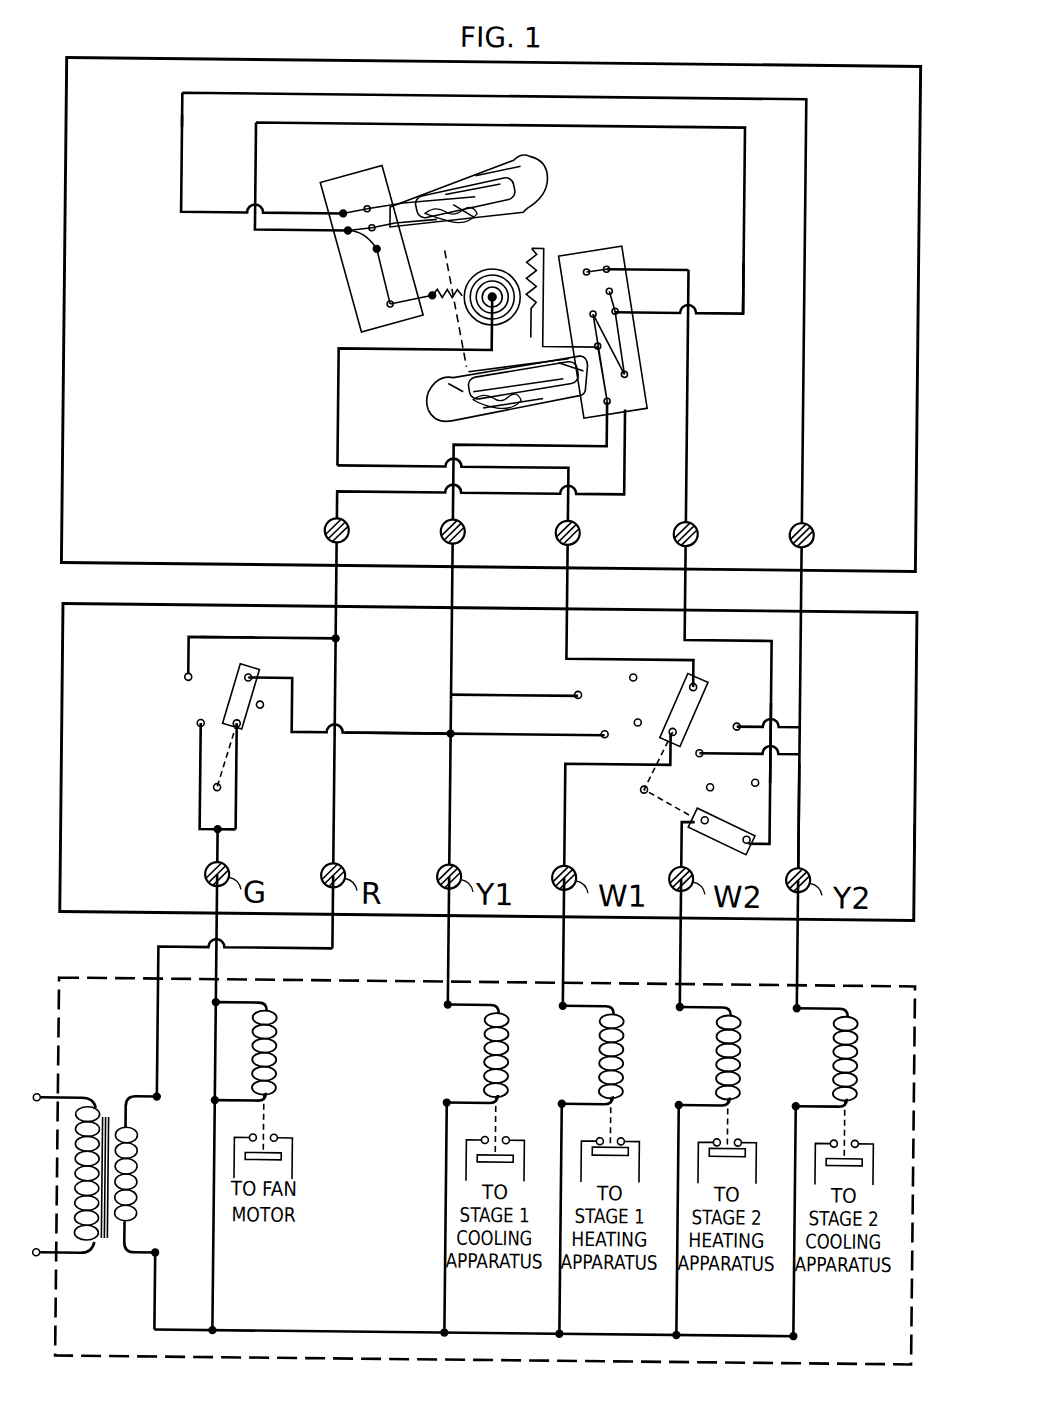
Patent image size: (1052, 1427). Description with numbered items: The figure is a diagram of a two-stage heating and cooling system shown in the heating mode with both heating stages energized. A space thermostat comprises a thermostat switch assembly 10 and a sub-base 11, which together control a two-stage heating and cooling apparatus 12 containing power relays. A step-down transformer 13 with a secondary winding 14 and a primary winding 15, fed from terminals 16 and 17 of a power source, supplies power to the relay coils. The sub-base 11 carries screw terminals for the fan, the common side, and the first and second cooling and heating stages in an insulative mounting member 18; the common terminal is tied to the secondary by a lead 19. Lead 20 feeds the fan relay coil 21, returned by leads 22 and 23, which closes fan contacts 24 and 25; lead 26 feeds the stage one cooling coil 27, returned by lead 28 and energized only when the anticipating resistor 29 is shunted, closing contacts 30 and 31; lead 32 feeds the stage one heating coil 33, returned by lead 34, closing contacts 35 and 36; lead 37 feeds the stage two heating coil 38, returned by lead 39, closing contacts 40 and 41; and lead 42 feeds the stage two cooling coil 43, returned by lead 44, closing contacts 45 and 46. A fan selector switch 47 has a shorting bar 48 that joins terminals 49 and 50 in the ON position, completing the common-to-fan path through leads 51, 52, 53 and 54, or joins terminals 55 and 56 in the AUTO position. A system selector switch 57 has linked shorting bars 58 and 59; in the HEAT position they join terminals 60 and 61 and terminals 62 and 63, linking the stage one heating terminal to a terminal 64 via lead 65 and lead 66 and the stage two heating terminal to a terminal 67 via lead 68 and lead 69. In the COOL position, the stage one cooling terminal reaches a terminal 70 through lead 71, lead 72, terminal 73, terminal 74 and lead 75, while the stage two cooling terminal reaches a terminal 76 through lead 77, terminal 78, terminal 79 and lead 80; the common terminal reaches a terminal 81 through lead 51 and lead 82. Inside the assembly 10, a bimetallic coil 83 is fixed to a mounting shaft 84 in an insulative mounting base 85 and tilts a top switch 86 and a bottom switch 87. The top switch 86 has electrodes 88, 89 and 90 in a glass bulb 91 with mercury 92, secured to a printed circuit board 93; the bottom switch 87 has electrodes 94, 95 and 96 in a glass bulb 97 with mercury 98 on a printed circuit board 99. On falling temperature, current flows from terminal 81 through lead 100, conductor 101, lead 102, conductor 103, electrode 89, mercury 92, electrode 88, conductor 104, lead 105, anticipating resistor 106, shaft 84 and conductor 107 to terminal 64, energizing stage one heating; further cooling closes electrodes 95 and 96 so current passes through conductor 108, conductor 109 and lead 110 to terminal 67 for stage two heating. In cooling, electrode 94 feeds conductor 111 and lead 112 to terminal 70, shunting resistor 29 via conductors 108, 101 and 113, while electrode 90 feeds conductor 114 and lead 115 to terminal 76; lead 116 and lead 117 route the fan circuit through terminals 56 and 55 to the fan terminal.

The thermostat switch assembly 10 is at (815, 58).
The sub-base 11 is at (842, 604).
The two-stage heating and cooling apparatus 12 is at (858, 978).
The voltage step-down transformer 13 is at (108, 1100).
The secondary winding 14 is at (136, 1178).
The primary winding 15 is at (82, 1170).
The terminal 16 is at (42, 1097).
The terminal 17 is at (42, 1262).
The insulative mounting member 18 is at (904, 833).
The lead 19 is at (336, 928).
The lead 20 is at (219, 928).
The operating coil 21 is at (280, 1015).
The lead 22 is at (219, 1283).
The lead 23 is at (162, 1275).
The relay contact 24 is at (256, 1133).
The relay contact 25 is at (279, 1133).
The lead 26 is at (451, 933).
The operating coil 27 is at (512, 1015).
The lead 28 is at (451, 1287).
The anticipating resistor 29 is at (530, 248).
The relay contact 30 is at (489, 1133).
The relay contact 31 is at (511, 1133).
The lead 32 is at (566, 933).
The operating coil 33 is at (627, 1015).
The lead 34 is at (566, 1287).
The relay contact 35 is at (605, 1133).
The relay contact 36 is at (626, 1133).
The lead 37 is at (683, 933).
The operating coil 38 is at (744, 1015).
The lead 39 is at (683, 1287).
The relay contact 40 is at (722, 1133).
The relay contact 41 is at (743, 1133).
The lead 42 is at (800, 933).
The operating coil 43 is at (861, 1015).
The lead 44 is at (800, 1287).
The relay contact 45 is at (838, 1133).
The relay contact 46 is at (859, 1133).
The fan selector switch 47 is at (160, 645).
The shorting bar 48 is at (262, 711).
The terminal 49 is at (198, 726).
The terminal 50 is at (186, 678).
The lead 51 is at (337, 780).
The lead 52 is at (208, 640).
The lead 53 is at (200, 772).
The lead 54 is at (221, 843).
The terminal 55 is at (240, 732).
The terminal 56 is at (248, 672).
The system selector switch 57 is at (834, 704).
The shorting bar 58 is at (708, 708).
The shorting bar 59 is at (748, 833).
The terminal 60 is at (668, 736).
The terminal 61 is at (707, 685).
The terminal 62 is at (705, 813).
The terminal 63 is at (740, 858).
The terminal 64 is at (578, 540).
The lead 65 is at (566, 848).
The lead 66 is at (566, 640).
The terminal 67 is at (696, 540).
The lead 68 is at (683, 848).
The lead 69 is at (684, 638).
The terminal 70 is at (463, 540).
The lead 71 is at (452, 780).
The lead 72 is at (490, 740).
The terminal 73 is at (603, 738).
The terminal 74 is at (580, 690).
The lead 75 is at (451, 624).
The terminal 76 is at (812, 540).
The lead 77 is at (801, 785).
The terminal 78 is at (699, 755).
The terminal 79 is at (771, 735).
The lead 80 is at (800, 640).
The terminal 81 is at (347, 540).
The lead 82 is at (335, 638).
The bimetallic coil 83 is at (506, 320).
The mounting shaft 84 is at (500, 276).
The insulative mounting base 85 is at (667, 80).
The top switch 86 is at (534, 156).
The bottom switch 87 is at (420, 410).
The electrode 88 is at (412, 226).
The electrode 89 is at (393, 200).
The electrode 90 is at (433, 188).
The glass bulb 91 is at (465, 175).
The mercury 92 is at (458, 222).
The printed circuit board 93 is at (316, 184).
The electrode 94 is at (550, 398).
The electrode 95 is at (512, 404).
The electrode 96 is at (462, 370).
The glass bulb 97 is at (430, 392).
The mercury 98 is at (450, 418).
The printed circuit board 99 is at (588, 256).
The lead 100 is at (626, 440).
The conductor 101 is at (626, 347).
The lead 102 is at (701, 322).
The conductor 103 is at (365, 244).
The conductor 104 is at (375, 268).
The lead 105 is at (428, 296).
The resistor 106 is at (452, 310).
The conductor 107 is at (334, 388).
The conductor 108 is at (625, 385).
The conductor 109 is at (612, 247).
The lead 110 is at (690, 394).
The conductor 111 is at (588, 404).
The lead 112 is at (463, 490).
The conductor 113 is at (620, 300).
The conductor 114 is at (350, 180).
The lead 115 is at (176, 120).
The lead 116 is at (378, 734).
The lead 117 is at (238, 780).